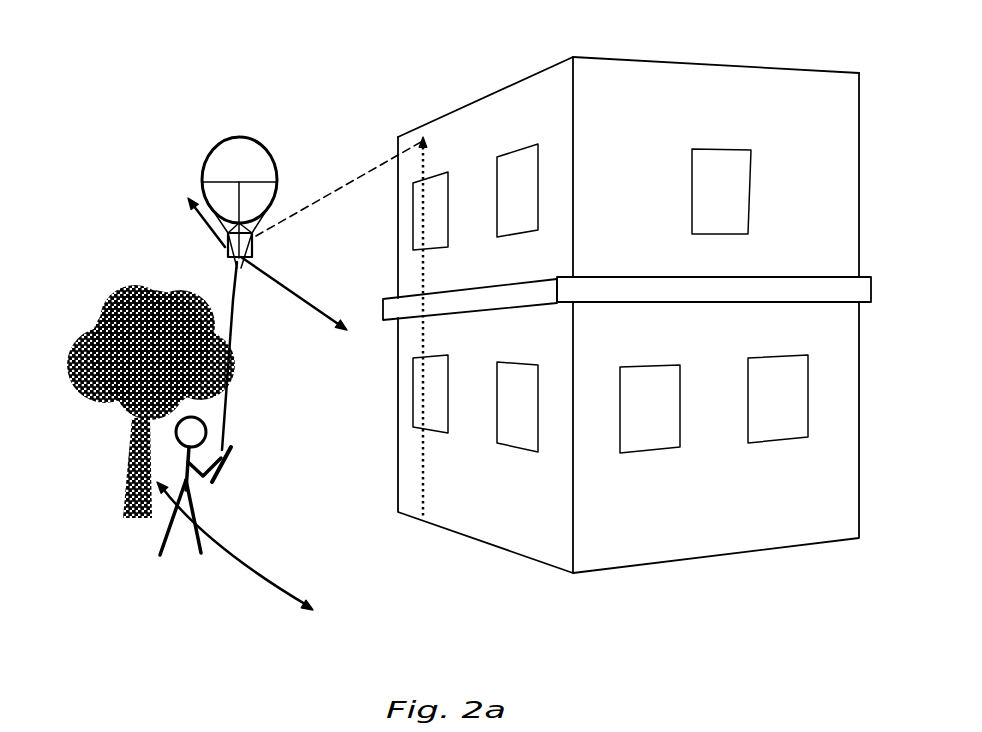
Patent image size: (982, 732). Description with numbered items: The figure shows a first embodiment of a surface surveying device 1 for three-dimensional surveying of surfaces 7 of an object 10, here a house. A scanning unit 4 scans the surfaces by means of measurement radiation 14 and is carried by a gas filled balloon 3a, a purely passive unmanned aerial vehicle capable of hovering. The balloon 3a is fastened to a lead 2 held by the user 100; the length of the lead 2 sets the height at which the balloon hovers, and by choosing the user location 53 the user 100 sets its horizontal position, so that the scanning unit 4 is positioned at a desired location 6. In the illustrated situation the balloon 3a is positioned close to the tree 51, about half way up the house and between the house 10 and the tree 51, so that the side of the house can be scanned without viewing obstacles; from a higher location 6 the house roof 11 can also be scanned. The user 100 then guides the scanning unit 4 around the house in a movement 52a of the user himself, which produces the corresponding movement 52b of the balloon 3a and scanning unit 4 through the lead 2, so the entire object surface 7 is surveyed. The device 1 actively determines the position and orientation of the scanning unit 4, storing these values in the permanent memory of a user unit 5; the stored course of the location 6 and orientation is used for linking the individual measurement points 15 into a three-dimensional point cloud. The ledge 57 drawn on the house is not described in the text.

The surface surveying device 1 is at (324, 94).
The lead 2 is at (287, 356).
The gas filled balloon 3a is at (192, 199).
The scanning unit 4 is at (175, 211).
The user unit 5 is at (280, 464).
The location 6 is at (188, 251).
The surfaces 7 is at (475, 139).
The object 10 is at (732, 516).
The house roof 11 is at (628, 69).
The measurement radiation 14 is at (353, 156).
The measurement points 15 is at (469, 332).
The tree 51 is at (143, 401).
The movement 52a is at (251, 546).
The movement 52b is at (315, 293).
The user location 53 is at (138, 508).
The ledge of building 57 is at (627, 279).
The user 100 is at (296, 407).